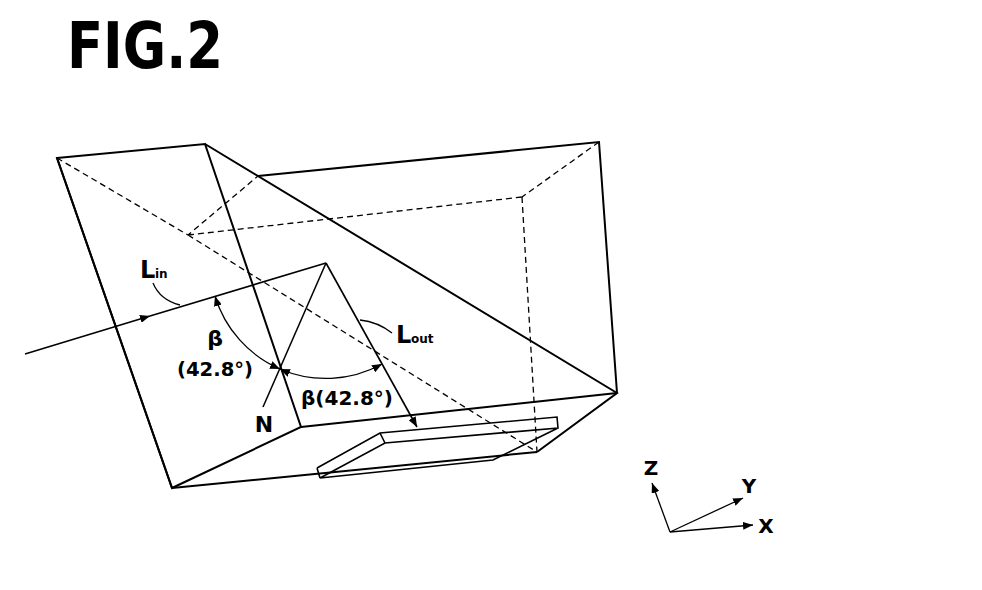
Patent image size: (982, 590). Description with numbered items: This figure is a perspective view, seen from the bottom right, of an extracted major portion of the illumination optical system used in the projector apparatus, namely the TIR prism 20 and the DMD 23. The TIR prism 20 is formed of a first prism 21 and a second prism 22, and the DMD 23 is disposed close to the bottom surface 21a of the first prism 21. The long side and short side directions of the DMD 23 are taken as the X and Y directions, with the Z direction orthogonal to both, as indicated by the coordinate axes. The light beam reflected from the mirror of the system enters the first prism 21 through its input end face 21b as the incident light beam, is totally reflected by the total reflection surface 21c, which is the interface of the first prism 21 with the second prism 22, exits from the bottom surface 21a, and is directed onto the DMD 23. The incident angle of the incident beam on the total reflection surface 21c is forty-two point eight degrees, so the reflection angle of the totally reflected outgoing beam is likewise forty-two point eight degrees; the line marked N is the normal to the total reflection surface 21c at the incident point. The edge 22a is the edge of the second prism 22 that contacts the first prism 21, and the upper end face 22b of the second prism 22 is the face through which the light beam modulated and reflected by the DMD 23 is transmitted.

The TIR prism 20 is at (381, 117).
The first prism 21 is at (94, 152).
The bottom surface 21a is at (250, 470).
The input end face 21b is at (163, 433).
The total reflection surface 21c is at (512, 365).
The second prism 22 is at (609, 212).
The edge of the second prism 22a is at (245, 188).
The upper end face 22b is at (530, 174).
The DMD 23 is at (402, 463).